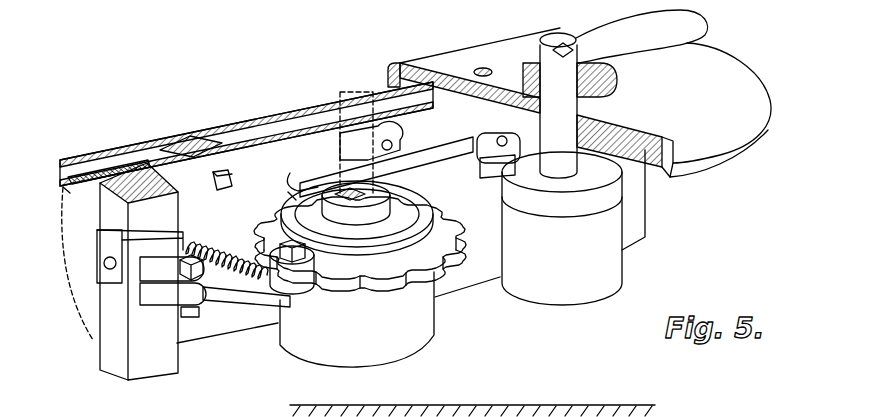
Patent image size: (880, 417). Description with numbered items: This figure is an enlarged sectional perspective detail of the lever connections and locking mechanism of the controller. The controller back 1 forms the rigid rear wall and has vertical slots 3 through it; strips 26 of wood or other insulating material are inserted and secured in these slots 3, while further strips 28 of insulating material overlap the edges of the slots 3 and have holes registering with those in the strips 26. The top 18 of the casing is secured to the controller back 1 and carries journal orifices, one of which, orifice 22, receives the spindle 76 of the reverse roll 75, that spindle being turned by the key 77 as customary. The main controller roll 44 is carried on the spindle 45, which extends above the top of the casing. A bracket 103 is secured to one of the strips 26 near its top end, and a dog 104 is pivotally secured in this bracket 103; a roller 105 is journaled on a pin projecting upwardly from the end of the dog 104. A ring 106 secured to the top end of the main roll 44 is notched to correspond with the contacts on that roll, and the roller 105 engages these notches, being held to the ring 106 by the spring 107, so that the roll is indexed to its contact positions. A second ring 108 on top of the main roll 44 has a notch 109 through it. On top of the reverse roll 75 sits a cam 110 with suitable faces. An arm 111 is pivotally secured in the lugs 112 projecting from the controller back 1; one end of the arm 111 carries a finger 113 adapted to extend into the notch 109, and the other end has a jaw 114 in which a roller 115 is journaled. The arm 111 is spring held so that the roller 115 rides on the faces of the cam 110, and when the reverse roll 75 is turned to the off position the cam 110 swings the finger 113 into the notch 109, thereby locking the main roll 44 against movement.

The controller back 1 is at (257, 157).
The vertical slots 3 is at (163, 150).
The strips of insulating material 28 is at (112, 168).
The strips of insulating material 26 is at (160, 375).
The bracket 103 is at (118, 287).
The dog 104 is at (248, 300).
The roller 105 is at (297, 288).
The ring 106 is at (385, 278).
The spring 107 is at (238, 248).
The ring 108 is at (283, 217).
The notch 109 is at (292, 196).
The cam 110 is at (605, 200).
The arm 111 is at (327, 165).
The lugs 112 is at (372, 136).
The finger 113 is at (318, 190).
The jaw 114 is at (498, 162).
The roller 115 is at (500, 172).
The main controller roll 44 is at (436, 320).
The spindle 45 is at (372, 207).
The reverse roll 75 is at (612, 263).
The spindle 76 is at (540, 78).
The key 77 is at (710, 29).
The top of the casing 18 is at (762, 123).
The journal orifice 22 is at (617, 114).